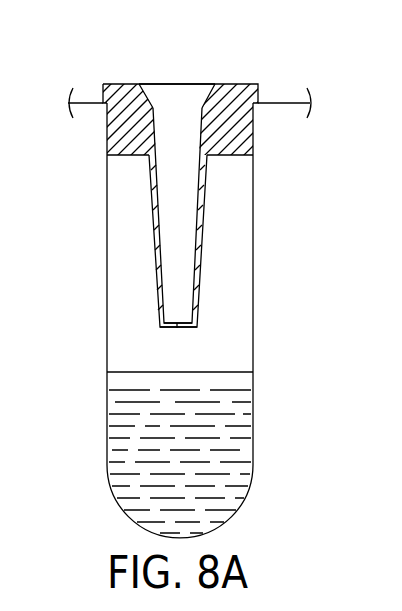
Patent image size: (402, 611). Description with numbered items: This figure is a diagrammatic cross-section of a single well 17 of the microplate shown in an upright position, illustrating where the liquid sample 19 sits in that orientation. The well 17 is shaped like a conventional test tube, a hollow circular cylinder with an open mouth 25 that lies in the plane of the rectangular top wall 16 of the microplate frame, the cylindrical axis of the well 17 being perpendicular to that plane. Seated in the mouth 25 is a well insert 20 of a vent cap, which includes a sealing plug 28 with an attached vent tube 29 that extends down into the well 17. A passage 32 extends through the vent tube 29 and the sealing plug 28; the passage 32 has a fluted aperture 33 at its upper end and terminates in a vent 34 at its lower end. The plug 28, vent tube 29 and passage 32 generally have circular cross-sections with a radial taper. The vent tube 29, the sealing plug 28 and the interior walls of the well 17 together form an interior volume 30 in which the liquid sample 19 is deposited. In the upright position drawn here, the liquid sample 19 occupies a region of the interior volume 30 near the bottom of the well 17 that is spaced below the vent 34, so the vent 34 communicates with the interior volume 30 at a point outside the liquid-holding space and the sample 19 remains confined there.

The top wall 16 is at (82, 98).
The well 17 is at (253, 200).
The liquid sample 19 is at (238, 443).
The well insert 20 is at (234, 84).
The open mouth 25 is at (243, 110).
The sealing plug 28 is at (247, 129).
The vent tube 29 is at (200, 251).
The interior volume 30 is at (238, 345).
The passage 32 is at (173, 199).
The fluted aperture 33 is at (162, 88).
The vent 34 is at (177, 327).